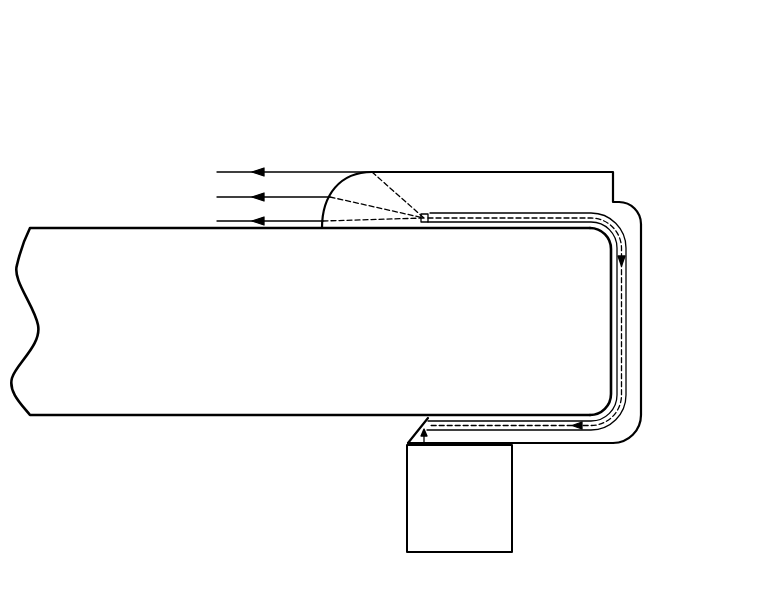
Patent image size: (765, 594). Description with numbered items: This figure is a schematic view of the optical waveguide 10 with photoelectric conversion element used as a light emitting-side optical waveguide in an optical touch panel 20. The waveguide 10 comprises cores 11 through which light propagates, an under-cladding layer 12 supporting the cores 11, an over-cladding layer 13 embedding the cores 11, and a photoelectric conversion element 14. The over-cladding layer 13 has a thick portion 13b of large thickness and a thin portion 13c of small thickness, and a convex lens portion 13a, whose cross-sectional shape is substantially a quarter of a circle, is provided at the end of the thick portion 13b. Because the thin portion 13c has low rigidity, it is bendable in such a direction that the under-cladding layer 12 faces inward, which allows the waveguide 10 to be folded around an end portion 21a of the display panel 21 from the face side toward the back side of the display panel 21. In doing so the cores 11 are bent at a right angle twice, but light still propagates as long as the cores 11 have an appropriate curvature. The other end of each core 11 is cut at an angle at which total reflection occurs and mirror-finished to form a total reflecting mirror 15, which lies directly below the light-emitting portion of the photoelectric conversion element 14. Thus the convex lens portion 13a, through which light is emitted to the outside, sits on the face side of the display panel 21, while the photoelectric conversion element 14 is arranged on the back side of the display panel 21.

The optical touch panel 20 is at (84, 101).
The optical waveguide with photoelectric conversion element 10 is at (553, 172).
The core 11 is at (620, 222).
The under-cladding layer 12 is at (610, 290).
The over-cladding layer 13 is at (460, 192).
The convex lens portion 13a is at (341, 180).
The thick portion 13b is at (505, 172).
The thin portion 13c is at (633, 315).
The photoelectric conversion element 14 is at (488, 510).
The total reflecting mirror 15 is at (423, 430).
The display panel 21 is at (229, 375).
The end portion 21a is at (588, 352).